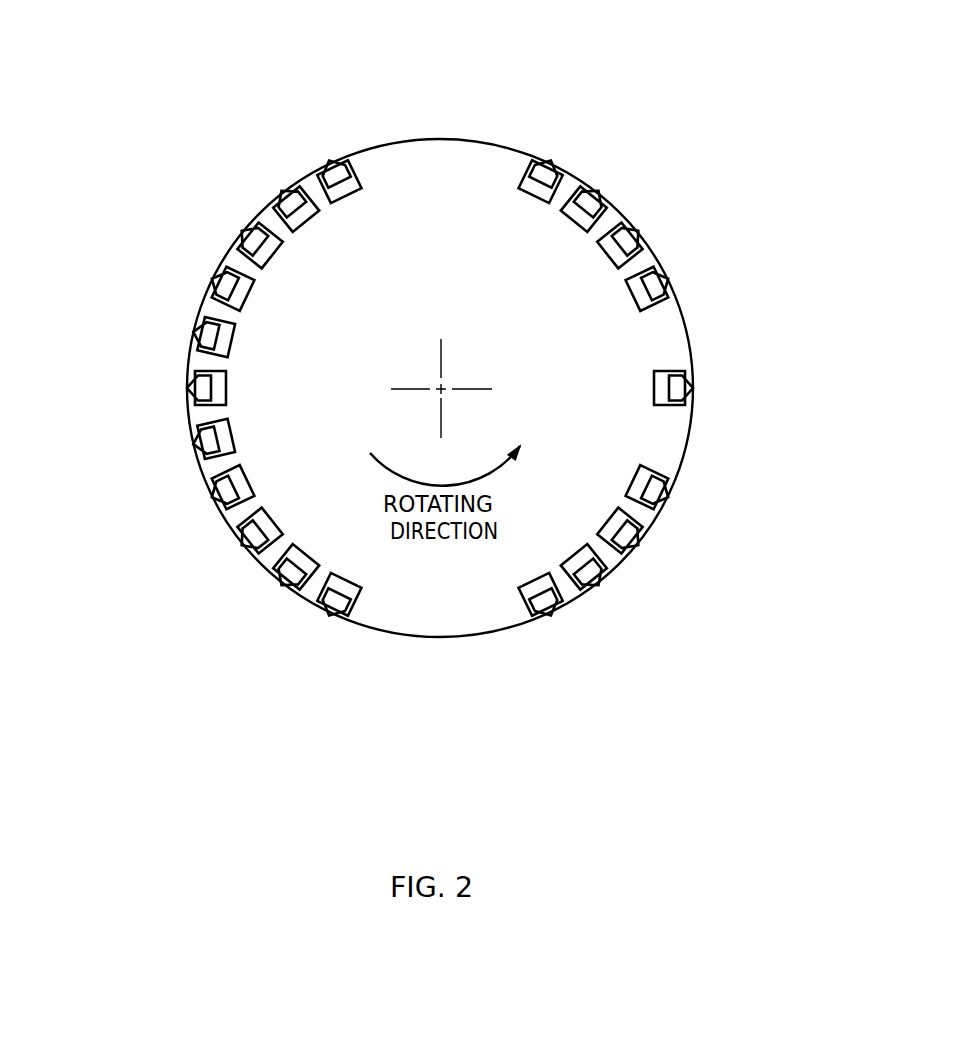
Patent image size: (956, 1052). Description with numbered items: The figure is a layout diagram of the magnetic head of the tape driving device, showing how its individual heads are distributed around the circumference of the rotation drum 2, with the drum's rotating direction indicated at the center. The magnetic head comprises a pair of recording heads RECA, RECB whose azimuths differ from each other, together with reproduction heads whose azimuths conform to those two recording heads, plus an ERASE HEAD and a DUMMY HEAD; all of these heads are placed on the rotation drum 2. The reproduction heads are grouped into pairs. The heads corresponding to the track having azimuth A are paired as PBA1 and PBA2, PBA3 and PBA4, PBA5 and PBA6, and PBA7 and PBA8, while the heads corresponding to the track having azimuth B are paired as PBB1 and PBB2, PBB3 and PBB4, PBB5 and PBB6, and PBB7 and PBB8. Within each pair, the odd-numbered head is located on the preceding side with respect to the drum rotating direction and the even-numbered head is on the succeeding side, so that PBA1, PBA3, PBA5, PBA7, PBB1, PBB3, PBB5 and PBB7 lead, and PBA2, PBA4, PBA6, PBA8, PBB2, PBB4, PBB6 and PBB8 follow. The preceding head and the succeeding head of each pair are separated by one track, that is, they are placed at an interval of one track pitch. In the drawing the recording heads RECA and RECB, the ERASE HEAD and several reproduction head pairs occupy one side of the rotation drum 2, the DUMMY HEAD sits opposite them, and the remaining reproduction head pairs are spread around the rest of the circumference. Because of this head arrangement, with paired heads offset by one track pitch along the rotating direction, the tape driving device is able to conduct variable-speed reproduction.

The rotation drum 2 is at (445, 139).
The reproduction head PBB8 is at (316, 168).
The reproduction head PBB7 is at (275, 198).
The reproduction head PBA8 is at (243, 240).
The reproduction head PBA7 is at (212, 290).
The recording head RECB is at (195, 340).
The recording head RECA is at (193, 394).
The erase head ERASE HEAD is at (198, 452).
The reproduction head PBB6 is at (215, 508).
The reproduction head PBB5 is at (248, 552).
The reproduction head PBA6 is at (288, 588).
The reproduction head PBA5 is at (335, 613).
The reproduction head PBA1 is at (572, 175).
The reproduction head PBA2 is at (610, 198).
The reproduction head PBB1 is at (643, 242).
The reproduction head PBB2 is at (668, 289).
The dummy head DUMMY HEAD is at (697, 403).
The reproduction head PBA3 is at (663, 508).
The reproduction head PBA4 is at (633, 550).
The reproduction head PBB3 is at (595, 588).
The reproduction head PBB4 is at (548, 613).